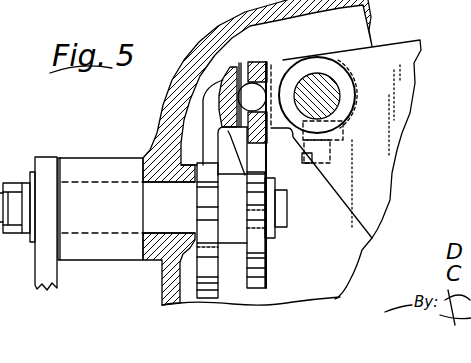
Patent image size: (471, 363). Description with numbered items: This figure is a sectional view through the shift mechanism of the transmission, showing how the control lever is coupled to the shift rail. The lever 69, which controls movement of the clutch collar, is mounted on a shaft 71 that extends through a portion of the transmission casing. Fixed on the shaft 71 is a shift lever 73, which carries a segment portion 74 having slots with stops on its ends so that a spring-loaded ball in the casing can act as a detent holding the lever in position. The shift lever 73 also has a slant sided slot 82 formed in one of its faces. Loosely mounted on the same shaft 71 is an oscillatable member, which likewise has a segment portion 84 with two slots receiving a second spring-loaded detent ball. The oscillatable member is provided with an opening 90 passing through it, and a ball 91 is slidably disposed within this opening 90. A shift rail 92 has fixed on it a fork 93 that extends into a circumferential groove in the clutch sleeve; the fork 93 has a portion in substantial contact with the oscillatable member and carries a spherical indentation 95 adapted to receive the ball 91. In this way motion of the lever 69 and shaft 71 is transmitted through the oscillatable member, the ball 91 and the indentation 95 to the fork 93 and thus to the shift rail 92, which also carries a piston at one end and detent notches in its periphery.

The lever 69 is at (43, 273).
The shaft 71 is at (110, 235).
The shift lever 73 is at (208, 118).
The segment portion 74 is at (211, 299).
The slant sided slot 82 is at (226, 66).
The segment portion 84 is at (258, 289).
The opening 90 is at (280, 117).
The ball 91 is at (250, 94).
The shift rail 92 is at (335, 93).
The fork 93 is at (410, 114).
The spherical indentation 95 is at (264, 60).